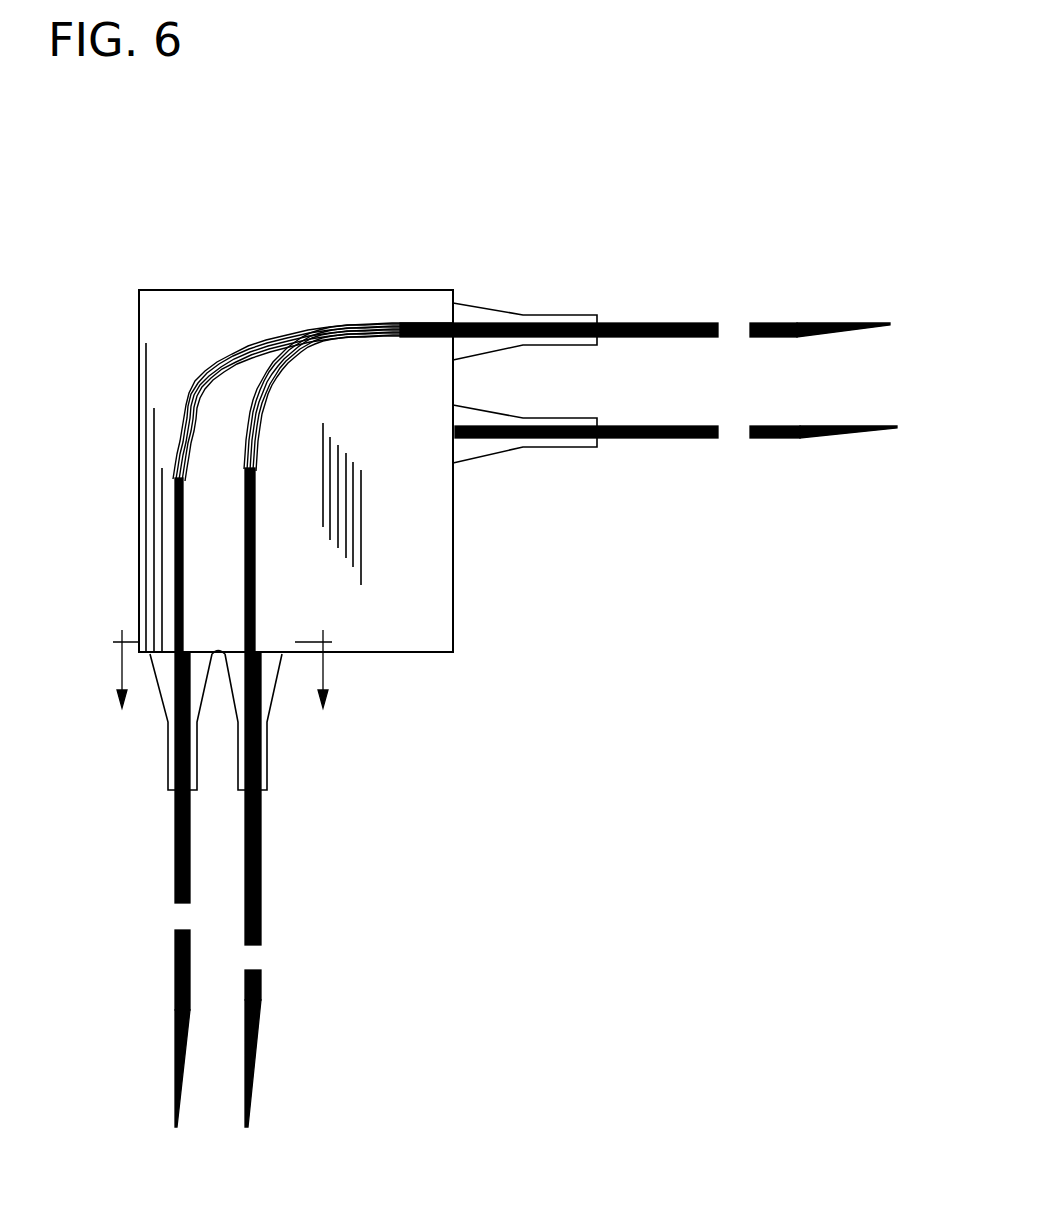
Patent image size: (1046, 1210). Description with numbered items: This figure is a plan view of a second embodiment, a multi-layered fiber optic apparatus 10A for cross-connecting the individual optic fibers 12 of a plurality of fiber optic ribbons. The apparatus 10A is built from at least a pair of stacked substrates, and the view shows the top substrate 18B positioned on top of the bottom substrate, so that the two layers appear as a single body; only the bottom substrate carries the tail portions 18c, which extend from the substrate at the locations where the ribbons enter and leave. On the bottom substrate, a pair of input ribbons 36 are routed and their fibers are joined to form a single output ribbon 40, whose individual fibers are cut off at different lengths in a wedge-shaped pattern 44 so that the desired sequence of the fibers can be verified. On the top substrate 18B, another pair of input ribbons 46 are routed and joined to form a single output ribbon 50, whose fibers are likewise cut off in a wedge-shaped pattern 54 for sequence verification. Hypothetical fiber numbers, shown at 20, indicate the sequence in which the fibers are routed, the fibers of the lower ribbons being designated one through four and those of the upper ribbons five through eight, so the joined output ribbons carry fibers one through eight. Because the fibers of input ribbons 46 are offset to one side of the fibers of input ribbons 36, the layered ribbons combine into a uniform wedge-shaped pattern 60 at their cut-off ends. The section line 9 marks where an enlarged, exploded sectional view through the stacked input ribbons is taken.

The multi-layered fiber optic apparatus 10A is at (372, 250).
The optic fibers 12 is at (345, 350).
The top substrate 18B is at (435, 600).
The tail portions 18c is at (585, 315).
The output ribbon 50 is at (634, 323).
The wedge-shaped cut-off pattern 54 is at (830, 330).
The output ribbon 40 is at (630, 440).
The wedge-shaped cut-off pattern 44 is at (843, 430).
The input ribbons 46 is at (247, 853).
The input ribbons 36 is at (262, 905).
The uniform wedge-shaped pattern 60 is at (183, 1060).
The fiber sequence designation 20 is at (140, 953).
The section line 9 is at (223, 685).